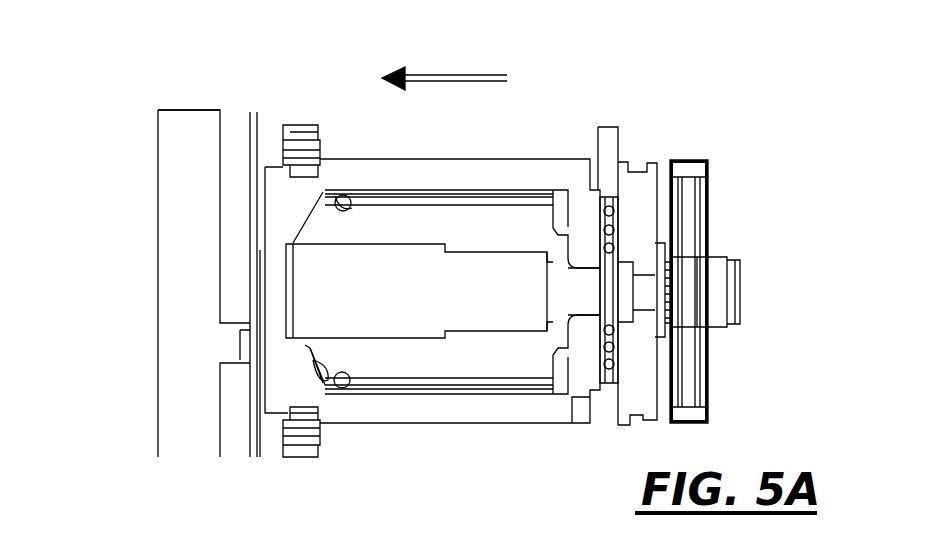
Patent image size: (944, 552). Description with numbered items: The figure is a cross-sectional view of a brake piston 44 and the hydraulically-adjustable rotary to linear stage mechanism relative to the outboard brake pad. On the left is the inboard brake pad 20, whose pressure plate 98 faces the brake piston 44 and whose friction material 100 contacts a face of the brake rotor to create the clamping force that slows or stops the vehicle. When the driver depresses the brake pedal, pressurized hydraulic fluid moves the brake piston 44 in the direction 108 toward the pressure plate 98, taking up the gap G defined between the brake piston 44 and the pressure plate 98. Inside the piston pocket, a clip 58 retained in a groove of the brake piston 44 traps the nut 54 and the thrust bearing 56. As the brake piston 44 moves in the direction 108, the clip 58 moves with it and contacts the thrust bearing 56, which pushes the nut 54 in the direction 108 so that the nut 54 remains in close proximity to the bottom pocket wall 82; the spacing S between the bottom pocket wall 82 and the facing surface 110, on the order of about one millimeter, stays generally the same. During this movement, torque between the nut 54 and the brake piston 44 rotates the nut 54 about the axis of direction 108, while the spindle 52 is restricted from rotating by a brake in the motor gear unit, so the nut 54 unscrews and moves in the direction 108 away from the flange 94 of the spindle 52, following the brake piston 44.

The inboard brake pad 20 is at (172, 110).
The brake piston 44 is at (407, 405).
The spindle 52 is at (398, 306).
The nut 54 is at (462, 358).
The thrust bearing 56 is at (560, 202).
The clip 58 is at (577, 208).
The bottom pocket wall 82 is at (327, 370).
The flange 94 is at (587, 347).
The pressure plate 98 is at (232, 130).
The friction material 100 is at (193, 147).
The direction 108 is at (442, 73).
The facing surface 110 is at (307, 350).
The gap G is at (258, 190).
The spacing S is at (310, 355).